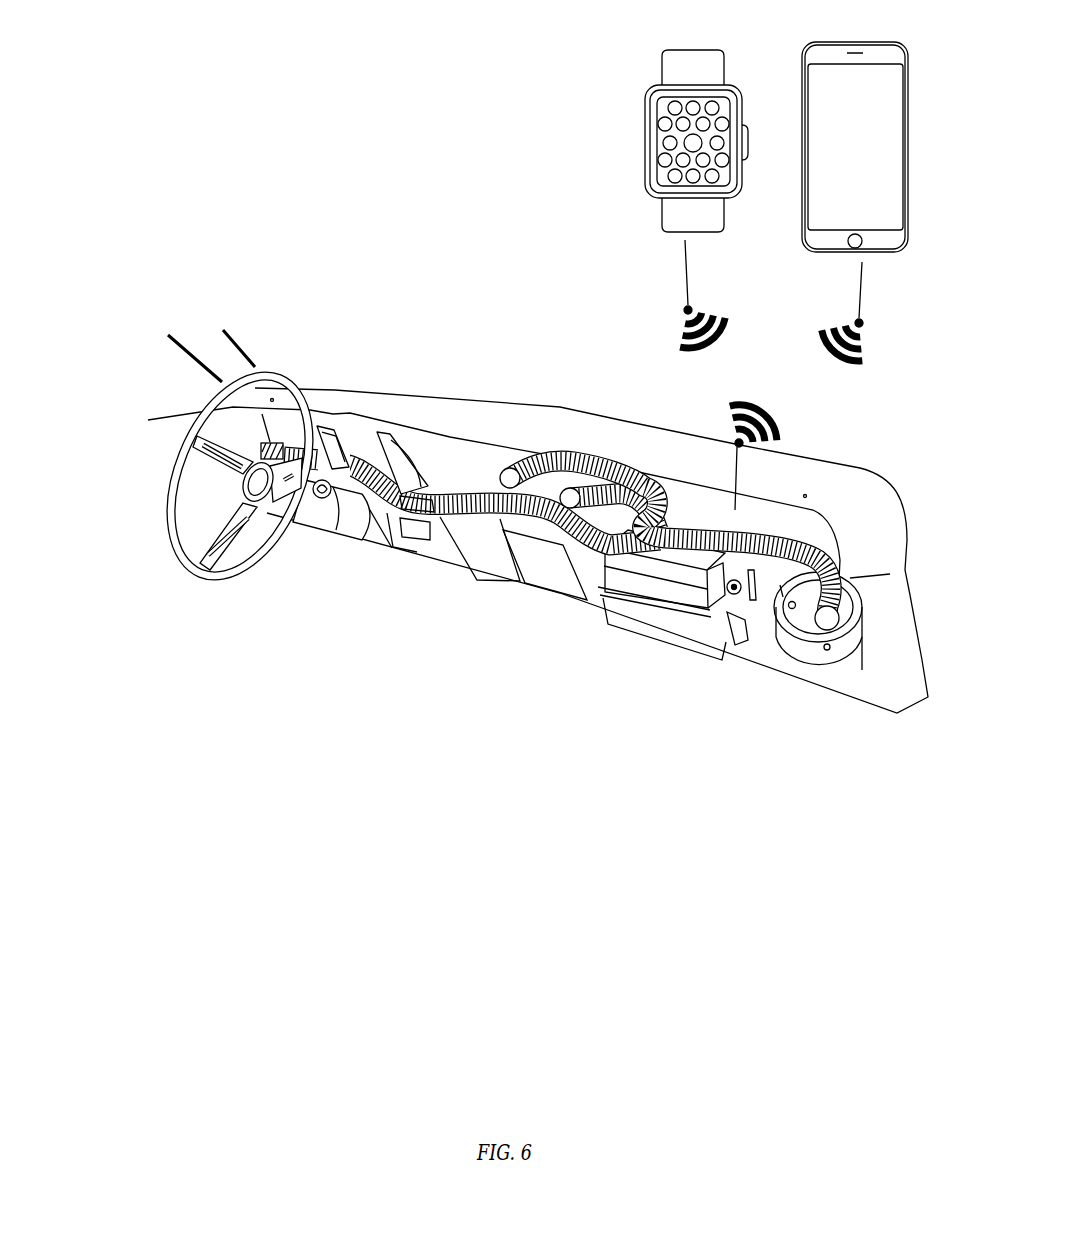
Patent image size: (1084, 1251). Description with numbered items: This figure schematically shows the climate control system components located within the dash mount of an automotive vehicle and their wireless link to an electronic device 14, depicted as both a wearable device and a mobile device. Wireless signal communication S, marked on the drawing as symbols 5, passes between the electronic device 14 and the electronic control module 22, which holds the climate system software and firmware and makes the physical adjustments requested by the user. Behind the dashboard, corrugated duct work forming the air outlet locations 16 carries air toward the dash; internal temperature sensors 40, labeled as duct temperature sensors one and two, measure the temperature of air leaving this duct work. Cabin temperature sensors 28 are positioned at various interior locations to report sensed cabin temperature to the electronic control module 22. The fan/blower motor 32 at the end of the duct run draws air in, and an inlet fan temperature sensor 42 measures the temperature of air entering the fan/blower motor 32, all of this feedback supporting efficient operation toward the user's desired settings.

The wireless communication signal 5 is at (775, 412).
The electronic device 14 is at (827, 125).
The air outlet locations 16 is at (600, 518).
The electronic control module 22 is at (717, 520).
The cabin temperature sensors 28 is at (848, 463).
The fan/blower motor 32 is at (817, 657).
The internal temperature sensors 40 is at (263, 447).
The inlet fan temperature sensor 42 is at (792, 608).